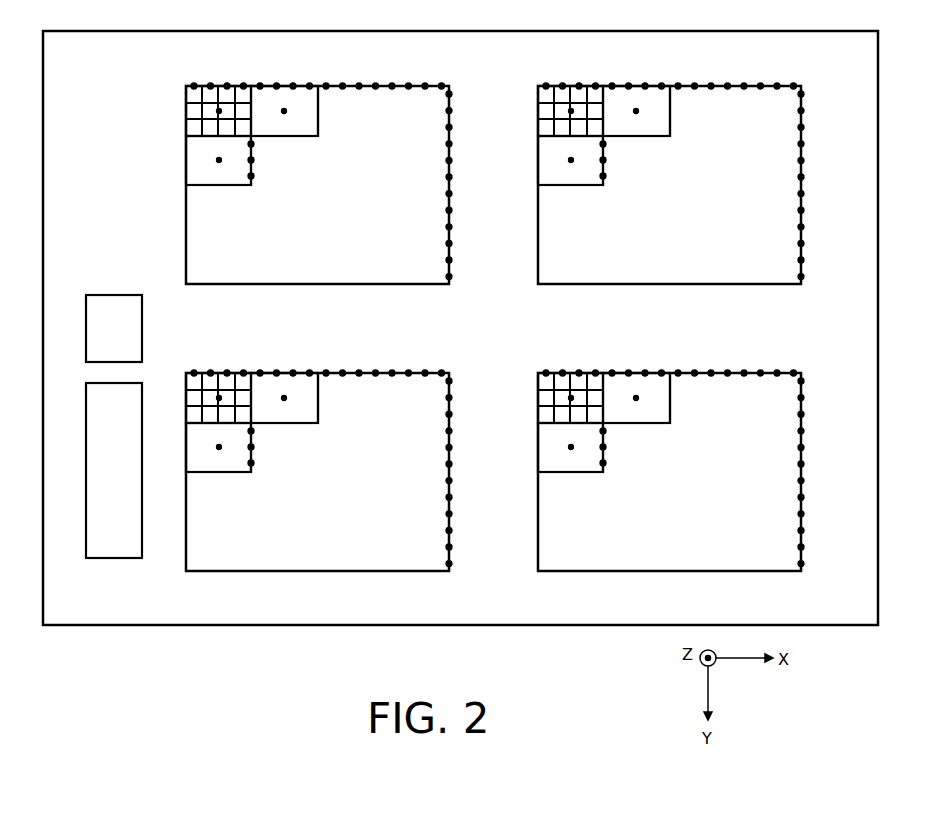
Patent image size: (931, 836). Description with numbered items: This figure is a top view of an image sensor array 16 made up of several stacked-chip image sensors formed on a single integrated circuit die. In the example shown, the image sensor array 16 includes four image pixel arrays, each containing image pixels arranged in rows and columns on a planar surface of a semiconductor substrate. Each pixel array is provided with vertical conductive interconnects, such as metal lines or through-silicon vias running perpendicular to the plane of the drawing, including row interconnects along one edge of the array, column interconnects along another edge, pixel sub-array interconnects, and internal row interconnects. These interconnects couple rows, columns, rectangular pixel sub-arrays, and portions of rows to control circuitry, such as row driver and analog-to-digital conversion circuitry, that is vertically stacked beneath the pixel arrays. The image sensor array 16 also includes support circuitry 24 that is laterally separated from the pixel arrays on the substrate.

The image sensor array 16 is at (130, 31).
The support circuitry 24 is at (103, 337).